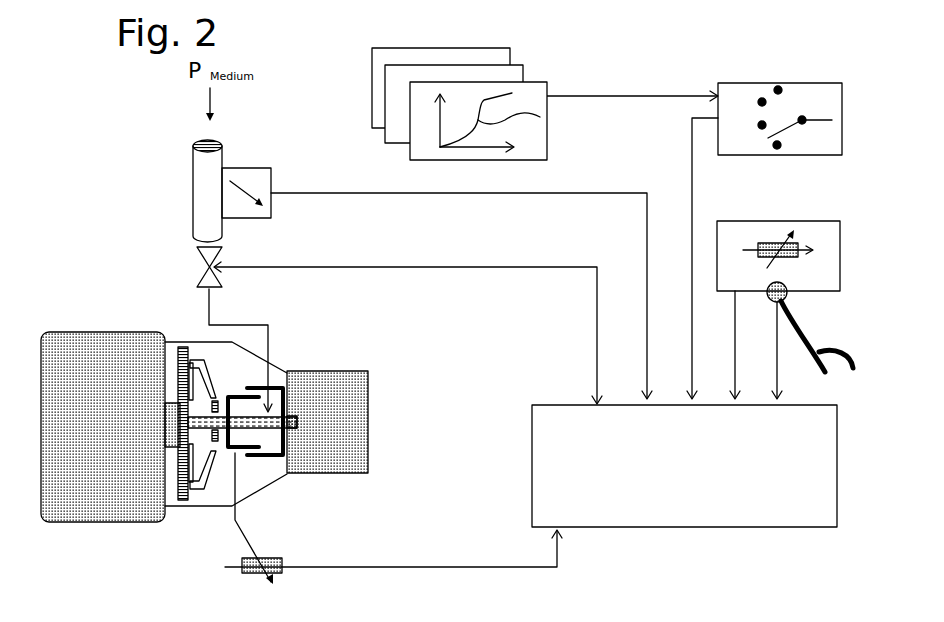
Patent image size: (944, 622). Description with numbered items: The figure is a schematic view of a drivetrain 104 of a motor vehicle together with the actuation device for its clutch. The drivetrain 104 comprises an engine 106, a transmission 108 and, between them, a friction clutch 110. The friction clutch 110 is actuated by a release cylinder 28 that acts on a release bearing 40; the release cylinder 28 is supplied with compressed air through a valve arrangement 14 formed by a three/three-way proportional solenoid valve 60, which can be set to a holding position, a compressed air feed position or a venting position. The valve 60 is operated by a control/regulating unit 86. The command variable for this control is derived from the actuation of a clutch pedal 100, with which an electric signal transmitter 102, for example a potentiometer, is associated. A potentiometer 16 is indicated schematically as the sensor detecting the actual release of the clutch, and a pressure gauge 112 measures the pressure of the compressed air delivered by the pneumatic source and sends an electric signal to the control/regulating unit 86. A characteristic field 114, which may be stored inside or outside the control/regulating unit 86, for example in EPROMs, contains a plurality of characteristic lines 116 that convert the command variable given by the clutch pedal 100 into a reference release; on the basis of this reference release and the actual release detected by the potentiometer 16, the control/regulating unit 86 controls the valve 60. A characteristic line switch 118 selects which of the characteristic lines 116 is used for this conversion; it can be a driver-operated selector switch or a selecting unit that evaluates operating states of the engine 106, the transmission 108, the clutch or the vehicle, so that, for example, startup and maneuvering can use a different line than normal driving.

The valve arrangement 14 is at (218, 252).
The potentiometer 16 is at (250, 574).
The release cylinder 28 is at (262, 458).
The release bearing 40 is at (222, 447).
The 3/3-way proportional solenoid valve 60 is at (221, 281).
The control/regulating unit 86 is at (780, 508).
The clutch pedal 100 is at (795, 317).
The electric signal transmitter 102 is at (797, 243).
The drivetrain 104 is at (84, 302).
The engine 106 is at (82, 502).
The transmission 108 is at (330, 382).
The friction clutch 110 is at (180, 352).
The pressure gauge 112 is at (257, 173).
The characteristic field 114 is at (493, 70).
The characteristic lines 116 is at (540, 117).
The characteristic line switch 118 is at (793, 100).